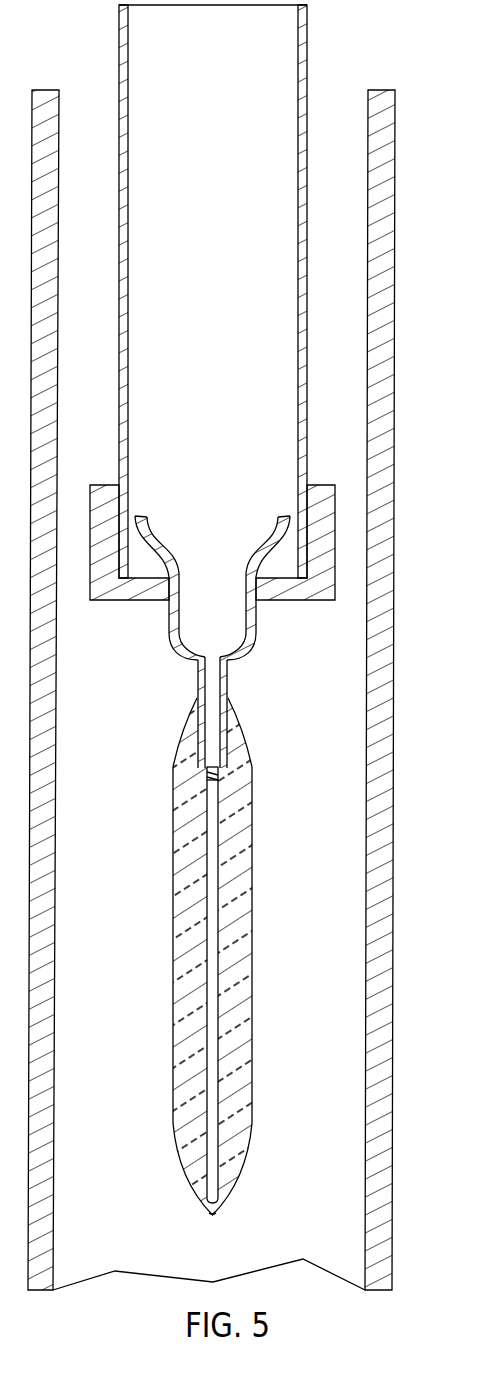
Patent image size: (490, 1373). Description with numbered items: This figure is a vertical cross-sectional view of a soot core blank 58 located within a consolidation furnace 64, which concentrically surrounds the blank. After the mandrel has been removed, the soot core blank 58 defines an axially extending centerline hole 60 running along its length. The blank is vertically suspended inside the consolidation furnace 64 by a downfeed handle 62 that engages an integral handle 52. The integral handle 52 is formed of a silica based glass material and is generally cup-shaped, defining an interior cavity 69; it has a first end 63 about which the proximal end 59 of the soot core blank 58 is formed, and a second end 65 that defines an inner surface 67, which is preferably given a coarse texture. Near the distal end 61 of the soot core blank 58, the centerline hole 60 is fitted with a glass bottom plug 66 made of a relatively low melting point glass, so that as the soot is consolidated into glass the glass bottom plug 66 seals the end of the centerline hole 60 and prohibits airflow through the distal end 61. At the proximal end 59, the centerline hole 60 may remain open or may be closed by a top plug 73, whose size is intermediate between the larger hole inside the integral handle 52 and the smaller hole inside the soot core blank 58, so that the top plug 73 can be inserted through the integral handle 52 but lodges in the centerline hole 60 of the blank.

The integral handle 52 is at (250, 656).
The soot core blank 58 is at (262, 963).
The proximal end 59 is at (173, 760).
The centerline hole 60 is at (212, 888).
The distal end 61 is at (190, 1186).
The downfeed handle 62 is at (307, 322).
The first end 63 is at (197, 682).
The consolidation furnace 64 is at (395, 129).
The second end 65 is at (150, 553).
The glass bottom plug 66 is at (212, 1214).
The inner surface 67 is at (152, 535).
The interior cavity 69 is at (188, 544).
The top plug 73 is at (218, 777).